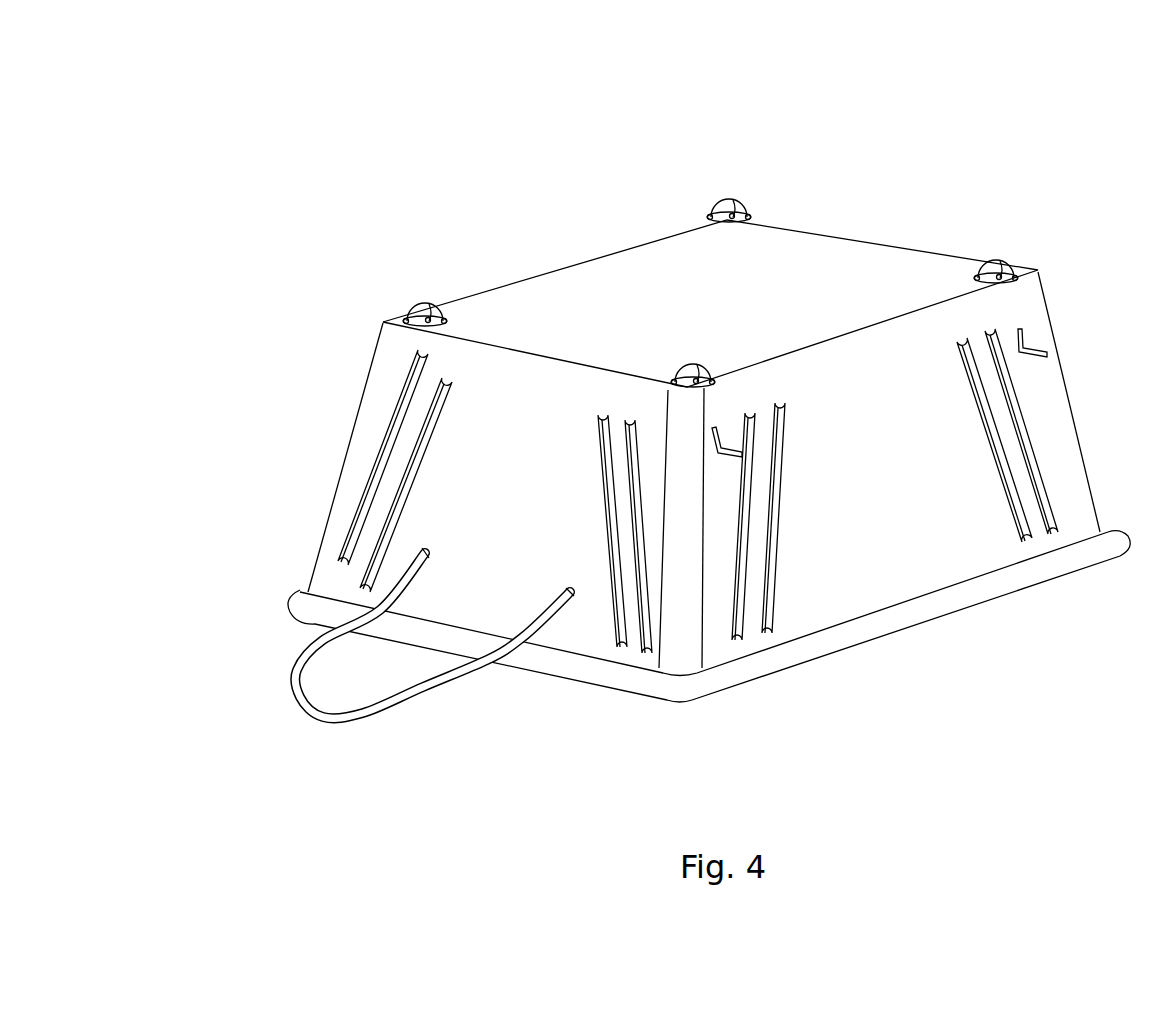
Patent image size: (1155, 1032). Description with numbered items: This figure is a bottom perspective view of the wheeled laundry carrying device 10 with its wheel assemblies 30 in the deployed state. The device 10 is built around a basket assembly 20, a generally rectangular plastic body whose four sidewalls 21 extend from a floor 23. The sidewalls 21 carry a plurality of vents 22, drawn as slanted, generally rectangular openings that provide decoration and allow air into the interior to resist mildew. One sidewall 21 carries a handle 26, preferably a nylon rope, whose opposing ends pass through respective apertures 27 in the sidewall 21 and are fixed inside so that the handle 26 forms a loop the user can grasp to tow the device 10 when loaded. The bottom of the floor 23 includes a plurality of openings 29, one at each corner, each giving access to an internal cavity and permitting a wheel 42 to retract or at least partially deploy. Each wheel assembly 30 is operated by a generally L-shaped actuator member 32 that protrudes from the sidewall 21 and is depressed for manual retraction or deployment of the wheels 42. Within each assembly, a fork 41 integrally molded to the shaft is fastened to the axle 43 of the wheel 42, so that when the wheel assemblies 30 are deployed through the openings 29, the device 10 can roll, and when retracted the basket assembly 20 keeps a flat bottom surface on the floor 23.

The wheeled laundry carrying device 10 is at (214, 126).
The basket assembly 20 is at (900, 686).
The sidewalls 21 is at (580, 637).
The vents 22 is at (737, 642).
The floor 23 is at (580, 275).
The handle 26 is at (423, 688).
The apertures 27 is at (427, 553).
The openings 29 is at (406, 320).
The wheel assemblies 30 is at (322, 268).
The actuator member 32 is at (742, 453).
The fork 41 is at (428, 318).
The wheel 42 is at (418, 302).
The axle 43 is at (450, 320).